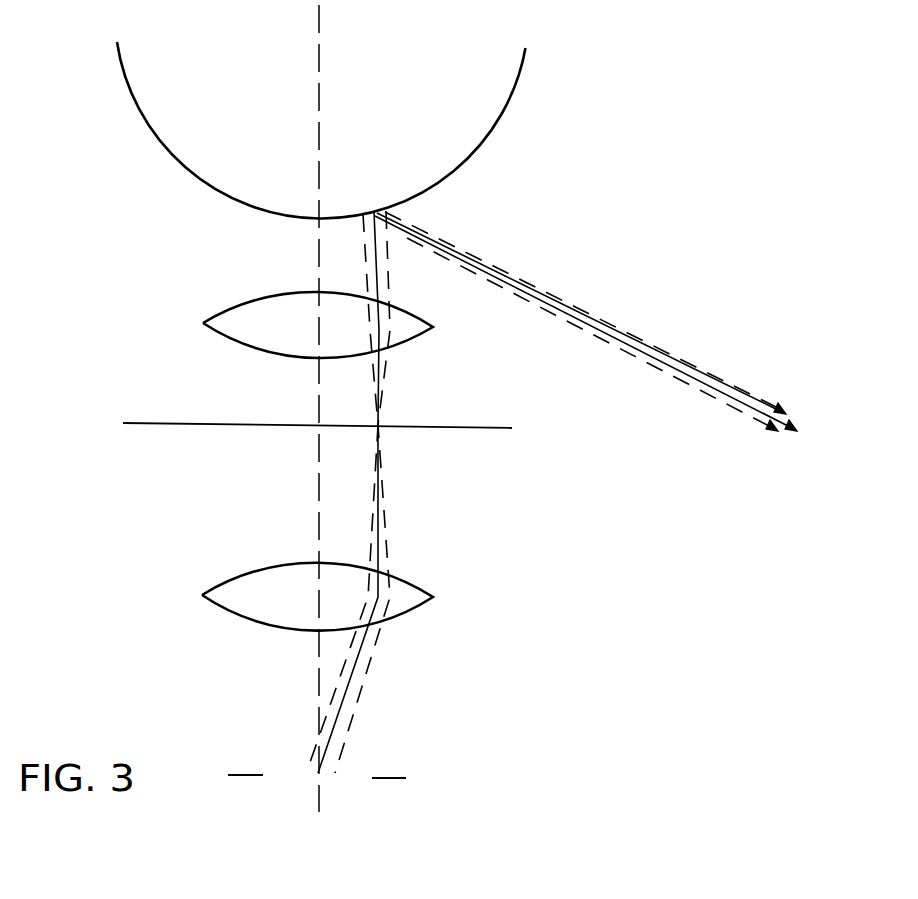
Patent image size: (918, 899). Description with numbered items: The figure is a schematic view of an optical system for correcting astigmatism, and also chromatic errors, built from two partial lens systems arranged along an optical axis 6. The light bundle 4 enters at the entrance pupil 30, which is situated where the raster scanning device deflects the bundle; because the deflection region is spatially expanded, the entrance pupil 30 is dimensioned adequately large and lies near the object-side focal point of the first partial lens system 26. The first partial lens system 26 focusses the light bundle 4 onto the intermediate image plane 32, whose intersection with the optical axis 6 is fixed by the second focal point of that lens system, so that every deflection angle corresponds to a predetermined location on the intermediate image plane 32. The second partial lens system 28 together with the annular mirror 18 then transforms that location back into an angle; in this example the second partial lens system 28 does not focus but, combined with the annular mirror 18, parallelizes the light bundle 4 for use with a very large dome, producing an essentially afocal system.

The annular mirror 18 is at (127, 78).
The optical axis 6 is at (320, 86).
The light bundle 4 is at (556, 297).
The second partial lens system 28 is at (247, 317).
The first partial lens system 26 is at (247, 585).
The intermediate image plane 32 is at (487, 430).
The entrance pupil 30 is at (318, 775).